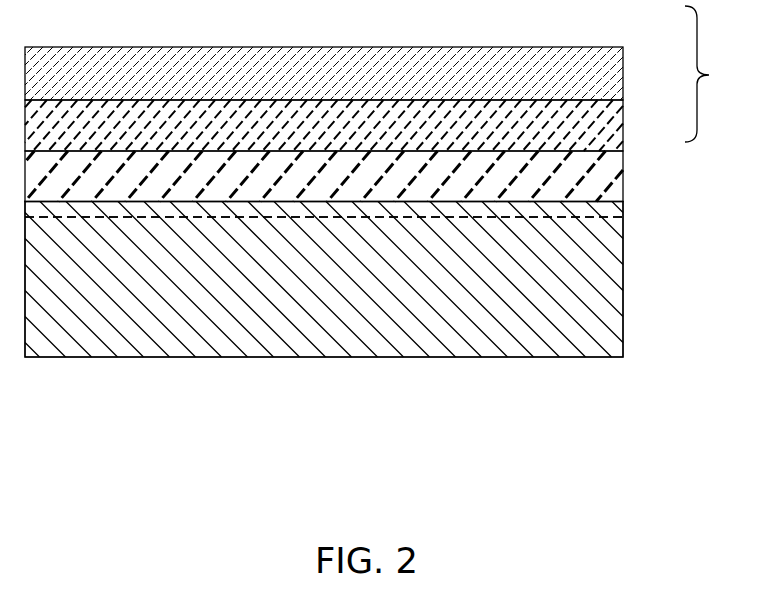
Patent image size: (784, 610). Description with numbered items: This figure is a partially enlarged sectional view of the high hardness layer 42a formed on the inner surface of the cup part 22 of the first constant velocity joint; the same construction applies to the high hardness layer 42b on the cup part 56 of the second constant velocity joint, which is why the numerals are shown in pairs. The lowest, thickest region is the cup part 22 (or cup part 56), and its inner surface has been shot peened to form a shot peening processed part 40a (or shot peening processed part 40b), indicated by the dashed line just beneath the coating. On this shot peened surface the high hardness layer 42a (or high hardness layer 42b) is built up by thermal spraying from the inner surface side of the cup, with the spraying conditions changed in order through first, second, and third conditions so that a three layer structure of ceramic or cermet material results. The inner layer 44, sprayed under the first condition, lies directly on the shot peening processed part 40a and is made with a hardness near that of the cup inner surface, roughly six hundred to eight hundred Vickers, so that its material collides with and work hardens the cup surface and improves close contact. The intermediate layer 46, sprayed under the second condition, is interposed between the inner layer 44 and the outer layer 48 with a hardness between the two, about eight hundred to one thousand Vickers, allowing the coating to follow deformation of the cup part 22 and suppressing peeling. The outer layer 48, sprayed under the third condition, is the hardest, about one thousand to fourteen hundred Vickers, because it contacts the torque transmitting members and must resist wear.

The cup part 22 is at (612, 298).
The cup part 56 is at (376, 283).
The shot peening processed part 40a is at (620, 210).
The shot peening processed part 40b is at (389, 242).
The high hardness layer 42a is at (391, 104).
The high hardness layer 42b is at (725, 74).
The inner layer 44 is at (352, 161).
The intermediate layer 46 is at (613, 125).
The outer layer 48 is at (613, 74).